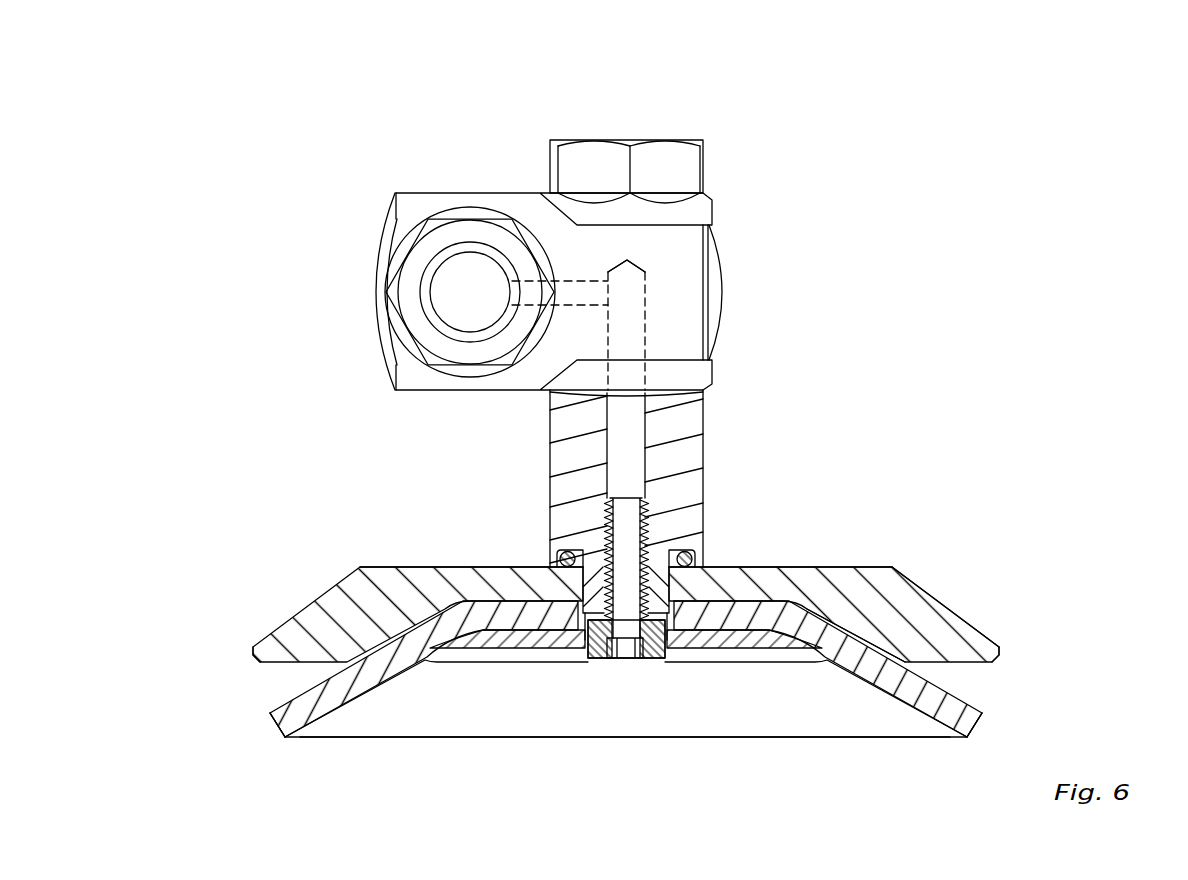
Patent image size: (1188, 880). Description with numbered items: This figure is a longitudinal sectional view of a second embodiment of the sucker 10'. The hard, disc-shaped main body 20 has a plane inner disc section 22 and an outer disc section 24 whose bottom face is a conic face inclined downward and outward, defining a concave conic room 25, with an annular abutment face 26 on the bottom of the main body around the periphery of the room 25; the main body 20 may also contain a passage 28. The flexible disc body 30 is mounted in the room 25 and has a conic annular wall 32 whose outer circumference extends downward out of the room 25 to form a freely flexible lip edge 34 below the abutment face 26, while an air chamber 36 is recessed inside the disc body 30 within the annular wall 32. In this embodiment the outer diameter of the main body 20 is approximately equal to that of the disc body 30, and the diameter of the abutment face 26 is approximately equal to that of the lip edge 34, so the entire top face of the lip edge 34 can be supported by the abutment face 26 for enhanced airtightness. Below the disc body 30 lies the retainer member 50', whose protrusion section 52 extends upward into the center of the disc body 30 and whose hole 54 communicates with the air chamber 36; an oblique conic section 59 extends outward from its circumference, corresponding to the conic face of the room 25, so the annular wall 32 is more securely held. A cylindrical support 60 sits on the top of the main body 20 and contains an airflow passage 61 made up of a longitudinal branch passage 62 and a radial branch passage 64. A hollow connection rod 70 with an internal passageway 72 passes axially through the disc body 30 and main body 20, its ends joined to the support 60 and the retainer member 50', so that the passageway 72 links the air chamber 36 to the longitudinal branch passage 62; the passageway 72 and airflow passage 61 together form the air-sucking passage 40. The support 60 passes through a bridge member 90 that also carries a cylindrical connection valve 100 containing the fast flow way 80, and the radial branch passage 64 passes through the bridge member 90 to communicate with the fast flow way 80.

The sucker 10' is at (991, 159).
The main body 20 is at (898, 560).
The inner disc section 22 is at (815, 565).
The outer disc section 24 is at (900, 640).
The room 25 is at (920, 655).
The annular abutment face 26 is at (298, 660).
The passage 28 is at (553, 583).
The disc body 30 is at (993, 720).
The annular wall 32 is at (893, 660).
The lip edge 34 is at (297, 717).
The air chamber 36 is at (445, 714).
The air-sucking passage 40 is at (632, 423).
The retainer member 50' is at (626, 730).
The protrusion section 52 is at (673, 610).
The hole 54 is at (683, 642).
The oblique conic section 59 is at (788, 650).
The support 60 is at (665, 140).
The airflow passage 61 is at (843, 235).
The longitudinal branch passage 62 is at (623, 345).
The radial branch passage 64 is at (597, 281).
The connection rod 70 is at (620, 488).
The passageway 72 is at (627, 515).
The fast flow way 80 is at (472, 270).
The bridge member 90 is at (383, 173).
The connection valve 100 is at (427, 262).